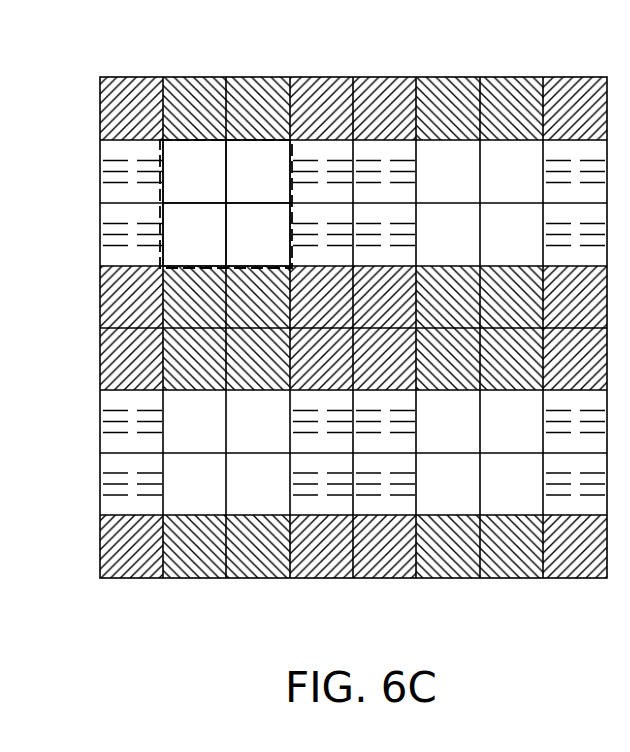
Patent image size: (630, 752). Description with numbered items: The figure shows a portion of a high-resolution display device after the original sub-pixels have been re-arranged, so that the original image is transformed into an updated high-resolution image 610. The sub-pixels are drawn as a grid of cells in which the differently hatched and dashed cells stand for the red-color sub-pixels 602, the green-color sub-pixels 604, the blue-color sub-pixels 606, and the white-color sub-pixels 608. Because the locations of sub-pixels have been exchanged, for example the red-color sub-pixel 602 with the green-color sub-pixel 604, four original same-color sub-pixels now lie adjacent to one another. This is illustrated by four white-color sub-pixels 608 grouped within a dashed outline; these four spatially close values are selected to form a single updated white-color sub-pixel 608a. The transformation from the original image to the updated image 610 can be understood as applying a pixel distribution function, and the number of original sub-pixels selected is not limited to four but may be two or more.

The red-color sub-pixels 602 is at (125, 77).
The green-color sub-pixels 604 is at (240, 77).
The blue-color sub-pixels 606 is at (100, 218).
The white-color sub-pixels 608 is at (177, 167).
The updated white-color sub-pixel 608a is at (100, 268).
The updated high-resolution image 610 is at (405, 77).